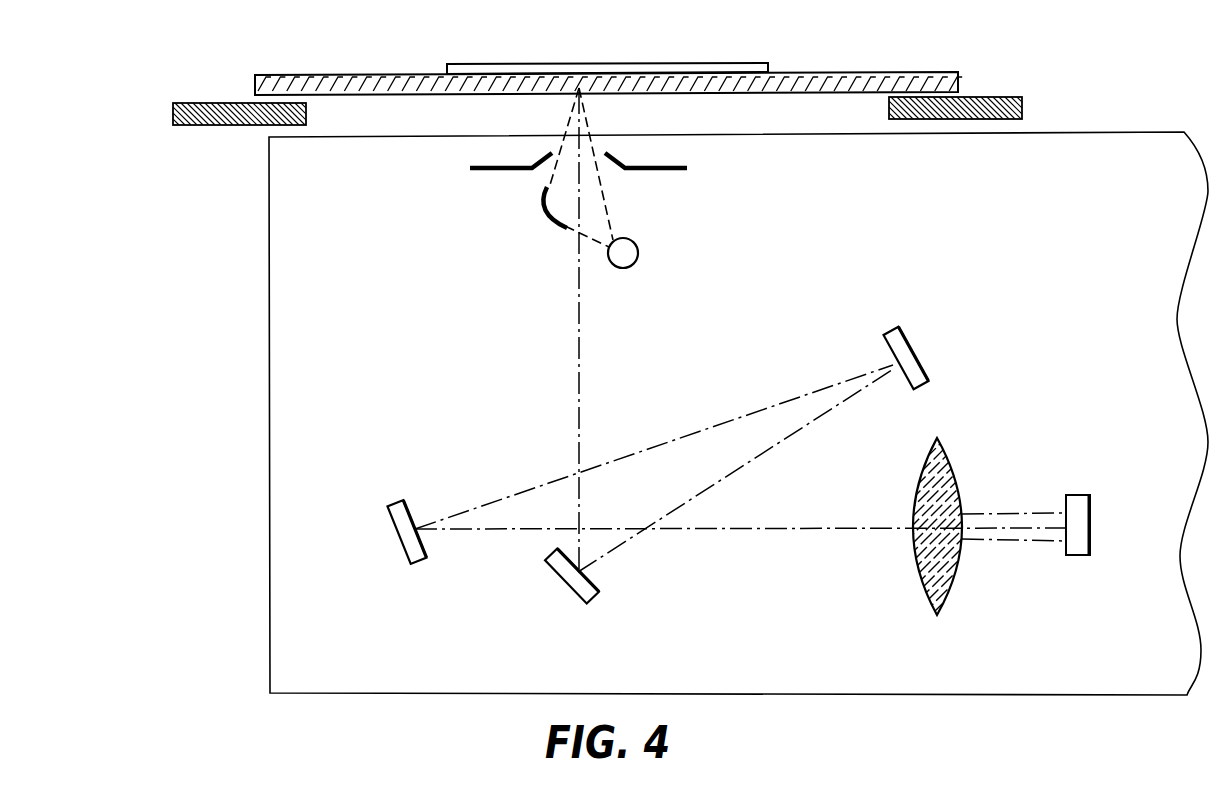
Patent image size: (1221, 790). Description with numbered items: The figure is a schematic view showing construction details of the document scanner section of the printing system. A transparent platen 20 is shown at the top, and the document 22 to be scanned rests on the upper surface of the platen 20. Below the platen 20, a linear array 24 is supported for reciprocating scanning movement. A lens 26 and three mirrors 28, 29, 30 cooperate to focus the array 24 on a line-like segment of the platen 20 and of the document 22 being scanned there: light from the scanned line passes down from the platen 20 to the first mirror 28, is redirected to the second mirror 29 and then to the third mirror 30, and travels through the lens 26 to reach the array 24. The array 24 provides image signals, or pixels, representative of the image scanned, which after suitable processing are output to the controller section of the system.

The transparent platen 20 is at (370, 95).
The document 22 is at (660, 63).
The linear array 24 is at (1072, 495).
The lens 26 is at (950, 582).
The mirror 28 is at (575, 598).
The mirror 29 is at (917, 350).
The mirror 30 is at (398, 548).